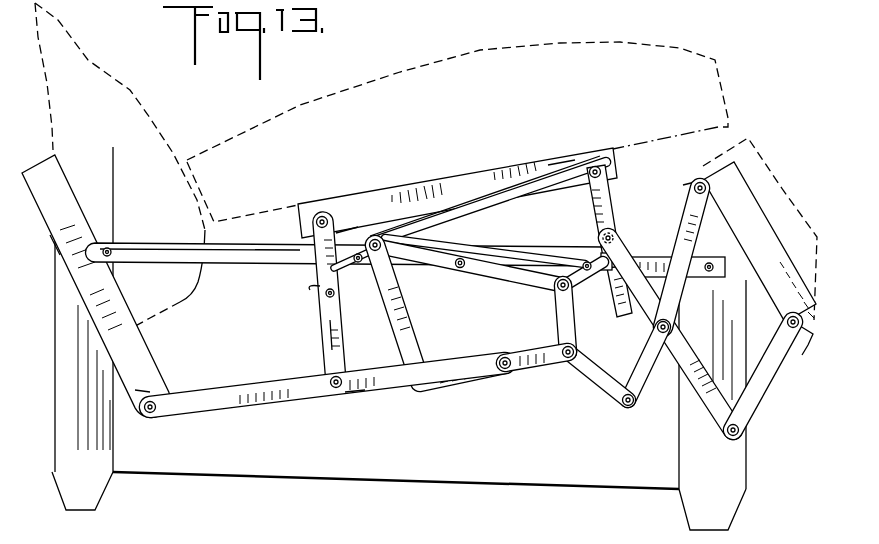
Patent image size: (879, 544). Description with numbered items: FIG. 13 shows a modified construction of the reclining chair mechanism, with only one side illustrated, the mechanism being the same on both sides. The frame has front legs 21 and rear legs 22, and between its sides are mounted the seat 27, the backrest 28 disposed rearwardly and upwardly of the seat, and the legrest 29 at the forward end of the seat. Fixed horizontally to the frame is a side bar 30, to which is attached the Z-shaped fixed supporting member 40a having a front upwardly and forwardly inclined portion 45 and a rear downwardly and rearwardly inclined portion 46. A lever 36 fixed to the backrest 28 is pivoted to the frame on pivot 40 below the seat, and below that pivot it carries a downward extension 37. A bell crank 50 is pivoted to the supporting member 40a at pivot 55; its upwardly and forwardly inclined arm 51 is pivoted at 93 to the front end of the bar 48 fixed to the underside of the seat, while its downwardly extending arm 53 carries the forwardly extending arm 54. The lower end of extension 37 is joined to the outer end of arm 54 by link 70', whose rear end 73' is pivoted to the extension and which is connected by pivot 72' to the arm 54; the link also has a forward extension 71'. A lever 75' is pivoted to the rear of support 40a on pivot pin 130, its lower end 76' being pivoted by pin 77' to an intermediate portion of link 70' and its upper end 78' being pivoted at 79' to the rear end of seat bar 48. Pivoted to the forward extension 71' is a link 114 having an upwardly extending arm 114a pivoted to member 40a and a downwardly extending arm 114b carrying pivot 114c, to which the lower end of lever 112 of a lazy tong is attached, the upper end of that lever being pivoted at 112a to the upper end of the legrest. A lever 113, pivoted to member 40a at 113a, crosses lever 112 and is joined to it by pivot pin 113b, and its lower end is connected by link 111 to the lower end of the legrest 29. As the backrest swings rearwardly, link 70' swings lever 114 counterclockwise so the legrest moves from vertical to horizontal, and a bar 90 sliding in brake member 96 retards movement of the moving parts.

The front legs 21 is at (730, 487).
The rear legs 22 is at (67, 432).
The seat 27 is at (473, 50).
The backrest 28 is at (148, 115).
The legrest 29 is at (790, 183).
The side bars 30 is at (563, 259).
The lever 36 is at (62, 257).
The extension 37 is at (150, 390).
The pivot 40 is at (62, 295).
The fixed supporting member 40a is at (498, 276).
The front portion 45 is at (594, 288).
The rear portion 46 is at (347, 274).
The bar 48 is at (465, 190).
The bell crank 50 is at (515, 203).
The arm 51 is at (553, 185).
The arm 53 is at (403, 326).
The arm 54 is at (510, 373).
The pivot 55 is at (384, 253).
The link 70' is at (327, 401).
The forward extension 71' is at (542, 380).
The pivot 72' is at (544, 339).
The rear end 73' is at (185, 423).
The lever 75' is at (355, 334).
The lower end 76' is at (364, 406).
The pivot pin 77' is at (316, 367).
The upper end 78' is at (406, 239).
The pivot 79' is at (293, 227).
The bar 90 is at (622, 208).
The pivot 93 is at (600, 166).
The brake member 96 is at (627, 256).
The link 111 is at (765, 388).
The lever 112 is at (693, 228).
The pivot 112a is at (698, 182).
The lever 113 is at (690, 380).
The pivot 113a is at (616, 233).
The pivot pin 113b is at (670, 327).
The link or lever 114 is at (598, 398).
The arm 114a is at (570, 332).
The arm 114b is at (600, 379).
The pivot 114c is at (628, 408).
The pivot pin 130 is at (318, 292).